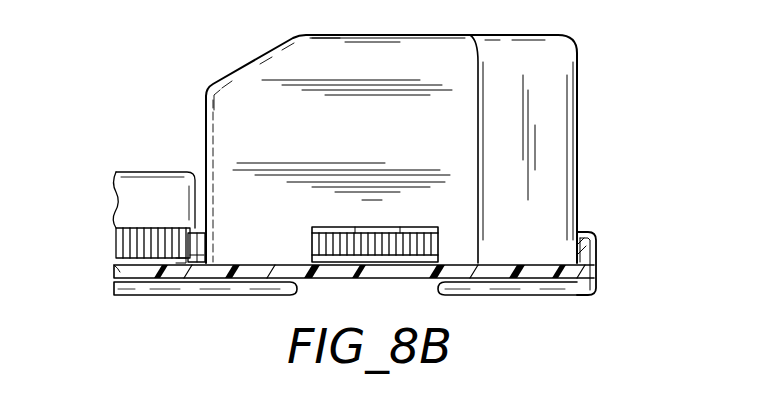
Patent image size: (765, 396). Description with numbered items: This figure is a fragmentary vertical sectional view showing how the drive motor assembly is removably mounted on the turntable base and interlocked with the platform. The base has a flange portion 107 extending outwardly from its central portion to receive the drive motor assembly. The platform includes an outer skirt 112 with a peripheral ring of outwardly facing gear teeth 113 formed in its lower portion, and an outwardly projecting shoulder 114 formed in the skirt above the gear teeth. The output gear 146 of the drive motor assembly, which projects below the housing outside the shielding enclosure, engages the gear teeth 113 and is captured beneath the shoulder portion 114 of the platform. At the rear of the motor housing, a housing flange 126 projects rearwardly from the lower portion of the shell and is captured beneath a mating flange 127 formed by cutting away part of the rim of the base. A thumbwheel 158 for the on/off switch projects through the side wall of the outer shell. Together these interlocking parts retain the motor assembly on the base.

The outer skirt 112 is at (207, 207).
The gear teeth 113 is at (118, 247).
The shoulder 114 is at (212, 240).
The flange portion 107 is at (309, 268).
The output gear 146 is at (182, 259).
The thumbwheel 158 is at (387, 243).
The housing flange 126 is at (592, 251).
The mating flange 127 is at (580, 242).